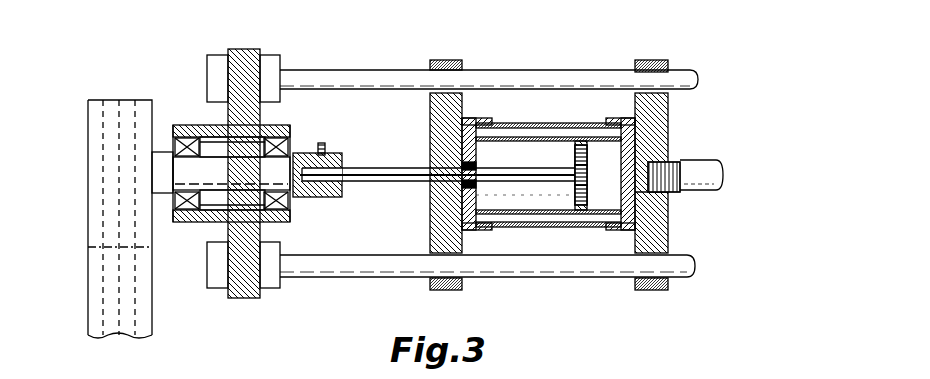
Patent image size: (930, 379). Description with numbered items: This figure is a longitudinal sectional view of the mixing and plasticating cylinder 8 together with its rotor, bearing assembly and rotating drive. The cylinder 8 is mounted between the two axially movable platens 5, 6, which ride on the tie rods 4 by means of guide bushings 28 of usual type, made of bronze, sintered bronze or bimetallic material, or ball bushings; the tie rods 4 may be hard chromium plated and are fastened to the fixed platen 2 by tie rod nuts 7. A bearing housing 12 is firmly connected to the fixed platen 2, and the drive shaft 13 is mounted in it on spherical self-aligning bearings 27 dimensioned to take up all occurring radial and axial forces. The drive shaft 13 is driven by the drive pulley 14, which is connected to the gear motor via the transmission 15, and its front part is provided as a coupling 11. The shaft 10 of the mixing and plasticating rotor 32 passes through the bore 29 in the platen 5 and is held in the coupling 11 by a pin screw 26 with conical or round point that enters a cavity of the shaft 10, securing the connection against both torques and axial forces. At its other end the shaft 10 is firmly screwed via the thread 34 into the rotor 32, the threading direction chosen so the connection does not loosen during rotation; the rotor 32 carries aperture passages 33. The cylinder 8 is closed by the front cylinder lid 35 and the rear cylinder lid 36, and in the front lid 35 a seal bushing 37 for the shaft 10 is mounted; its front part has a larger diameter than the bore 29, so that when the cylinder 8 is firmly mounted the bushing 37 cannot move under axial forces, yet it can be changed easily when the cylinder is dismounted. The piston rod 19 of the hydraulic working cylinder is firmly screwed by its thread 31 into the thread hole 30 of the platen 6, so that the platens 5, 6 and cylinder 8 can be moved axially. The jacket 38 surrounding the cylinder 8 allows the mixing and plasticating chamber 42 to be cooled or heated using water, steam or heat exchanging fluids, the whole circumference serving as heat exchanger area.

The fixed platen 2 is at (243, 62).
The tie rods 4 is at (346, 80).
The axially movable platen 5 is at (448, 62).
The axially movable platen 6 is at (657, 62).
The tie rod nuts 7 is at (218, 72).
The mixing and plasticating cylinder 8 is at (532, 124).
The shaft 10 is at (370, 175).
The coupling 11 is at (343, 157).
The bearing housing 12 is at (216, 131).
The drive shaft 13 is at (185, 168).
The drive pulley 14 is at (110, 174).
The transmission 15 is at (113, 282).
The piston rod 19 is at (690, 180).
The pin screw 26 is at (323, 160).
The spherical self-aligning bearings 27 is at (188, 214).
The guide bushings 28 is at (433, 63).
The bore 29 is at (432, 182).
The thread hole 30 is at (658, 196).
The thread 31 is at (665, 176).
The mixing and plasticating rotor 32 is at (580, 213).
The aperture passages 33 is at (575, 158).
The thread 34 is at (587, 162).
The front cylinder lid 35 is at (469, 134).
The rear cylinder lid 36 is at (632, 123).
The seal bushing 37 is at (477, 171).
The jacket 38 is at (510, 215).
The mixing and plasticating chamber 42 is at (513, 195).